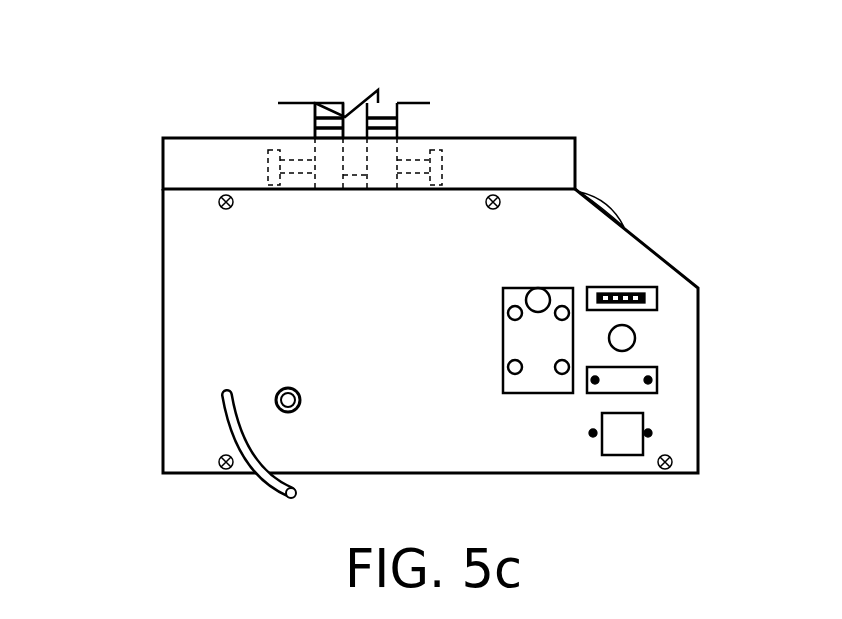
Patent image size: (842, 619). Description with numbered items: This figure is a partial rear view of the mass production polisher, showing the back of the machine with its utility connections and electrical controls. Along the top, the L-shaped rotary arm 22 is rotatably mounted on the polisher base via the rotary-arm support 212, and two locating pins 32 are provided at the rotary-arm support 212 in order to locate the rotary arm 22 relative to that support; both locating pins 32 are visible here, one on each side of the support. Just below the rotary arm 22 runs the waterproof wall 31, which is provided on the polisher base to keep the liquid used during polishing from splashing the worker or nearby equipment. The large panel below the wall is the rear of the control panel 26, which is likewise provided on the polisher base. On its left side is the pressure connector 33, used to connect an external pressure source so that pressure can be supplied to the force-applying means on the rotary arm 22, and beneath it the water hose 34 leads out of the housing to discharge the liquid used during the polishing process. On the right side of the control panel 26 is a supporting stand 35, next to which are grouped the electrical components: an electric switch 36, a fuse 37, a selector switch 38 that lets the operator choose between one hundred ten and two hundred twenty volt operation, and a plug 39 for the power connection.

The rotary-arm support 212 is at (332, 148).
The rotary arm 22 is at (386, 113).
The control panel 26 is at (661, 252).
The waterproof wall 31 is at (218, 161).
The locating pin 32 is at (267, 166).
The pressure connector 33 is at (287, 386).
The water hose 34 is at (218, 399).
The supporting stand 35 is at (523, 334).
The electric switch 36 is at (645, 298).
The fuse 37 is at (636, 338).
The selector switch 38 is at (657, 380).
The plug 39 is at (643, 445).